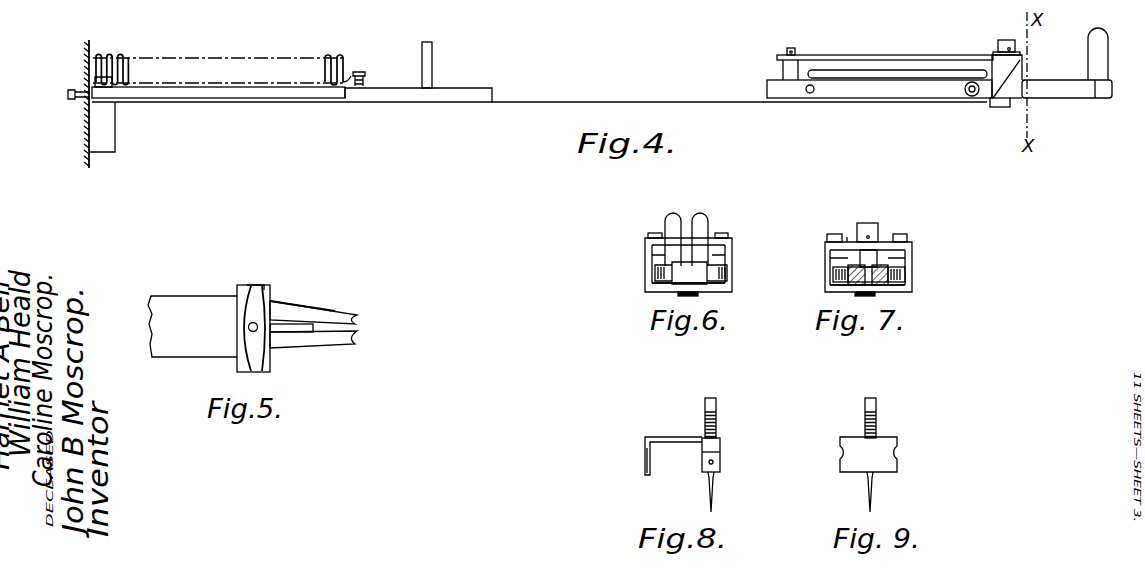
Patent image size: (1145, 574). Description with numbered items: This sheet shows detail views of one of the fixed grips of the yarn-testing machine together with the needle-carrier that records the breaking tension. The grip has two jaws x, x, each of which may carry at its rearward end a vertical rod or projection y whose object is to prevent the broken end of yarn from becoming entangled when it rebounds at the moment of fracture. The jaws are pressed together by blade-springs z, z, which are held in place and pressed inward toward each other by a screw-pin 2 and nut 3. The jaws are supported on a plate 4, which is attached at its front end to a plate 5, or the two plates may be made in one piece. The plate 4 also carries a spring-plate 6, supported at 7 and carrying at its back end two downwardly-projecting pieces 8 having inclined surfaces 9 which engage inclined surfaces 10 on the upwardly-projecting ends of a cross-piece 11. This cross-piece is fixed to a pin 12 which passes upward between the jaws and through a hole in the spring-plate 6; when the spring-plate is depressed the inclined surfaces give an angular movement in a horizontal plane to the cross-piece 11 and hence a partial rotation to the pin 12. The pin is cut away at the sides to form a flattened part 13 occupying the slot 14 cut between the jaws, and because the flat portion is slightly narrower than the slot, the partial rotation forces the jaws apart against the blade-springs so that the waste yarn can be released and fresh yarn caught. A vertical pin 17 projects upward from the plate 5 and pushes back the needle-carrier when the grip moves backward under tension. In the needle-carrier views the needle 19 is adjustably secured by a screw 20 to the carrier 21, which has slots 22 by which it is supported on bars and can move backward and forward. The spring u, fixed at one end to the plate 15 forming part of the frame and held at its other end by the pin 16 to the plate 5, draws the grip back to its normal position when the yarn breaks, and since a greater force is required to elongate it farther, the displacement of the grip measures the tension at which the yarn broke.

In FIG. 6, the screw-pin 2 is at (725, 273).
In FIG. 7, the screw-pin 2 is at (906, 273).
In FIG. 4, the nut 3 is at (972, 97).
In FIG. 6, the nut 3 is at (655, 280).
In FIG. 7, the nut 3 is at (840, 280).
In FIG. 4, the plate 4 is at (620, 98).
In FIG. 5, the plate 4 is at (192, 326).
In FIG. 4, the plate 5 is at (313, 94).
In FIG. 4, the spring-plate 6 is at (858, 52).
In FIG. 7, the spring-plate 6 is at (848, 237).
In FIG. 4, the support 7 is at (796, 49).
In FIG. 4, the downwardly-projecting pieces 8 is at (1024, 58).
In FIG. 6, the downwardly-projecting pieces 8 is at (647, 245).
In FIG. 7, the downwardly-projecting pieces 8 is at (829, 248).
In FIG. 4, the inclined surfaces 9 is at (1010, 74).
In FIG. 6, the inclined surfaces 9 is at (650, 258).
In FIG. 7, the inclined surfaces 9 is at (832, 262).
In FIG. 4, the inclined surfaces 10 is at (1022, 98).
In FIG. 4, the cross-piece 11 is at (1000, 107).
In FIG. 5, the cross-piece 11 is at (258, 303).
In FIG. 6, the cross-piece 11 is at (705, 292).
In FIG. 7, the cross-piece 11 is at (885, 292).
In FIG. 4, the pin 12 is at (1008, 40).
In FIG. 5, the pin 12 is at (253, 328).
In FIG. 7, the pin 12 is at (872, 232).
In FIG. 7, the flattened part 13 is at (866, 278).
In FIG. 5, the slot 14 is at (307, 332).
In FIG. 4, the plate 15 is at (70, 112).
In FIG. 4, the pin 16 is at (367, 72).
In FIG. 4, the vertical pin 17 is at (432, 60).
In FIG. 8, the needle 19 is at (715, 497).
In FIG. 9, the needle 19 is at (874, 498).
In FIG. 8, the screw 20 is at (717, 410).
In FIG. 9, the screw 20 is at (877, 411).
In FIG. 8, the carrier 21 is at (708, 463).
In FIG. 8, the slots 22 is at (720, 450).
In FIG. 9, the slots 22 is at (843, 448).
In FIG. 4, the spring u is at (130, 70).
In FIG. 4, the jaws x is at (1090, 98).
In FIG. 5, the jaws x is at (337, 318).
In FIG. 4, the vertical rod or projection y is at (1108, 52).
In FIG. 6, the vertical rod or projection y is at (698, 219).
In FIG. 5, the blade-springs z is at (298, 303).